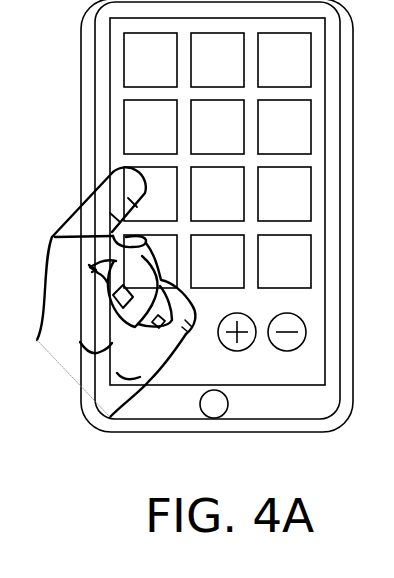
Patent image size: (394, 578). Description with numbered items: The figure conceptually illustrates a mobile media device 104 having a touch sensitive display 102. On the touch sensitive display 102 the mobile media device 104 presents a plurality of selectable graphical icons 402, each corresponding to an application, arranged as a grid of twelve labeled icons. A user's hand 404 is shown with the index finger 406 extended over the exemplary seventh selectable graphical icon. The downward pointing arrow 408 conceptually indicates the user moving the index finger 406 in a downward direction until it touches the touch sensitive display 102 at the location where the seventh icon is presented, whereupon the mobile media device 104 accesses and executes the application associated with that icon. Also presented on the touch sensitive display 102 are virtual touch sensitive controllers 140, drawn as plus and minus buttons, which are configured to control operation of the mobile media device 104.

The touch sensitive display 102 is at (310, 380).
The mobile media device 104 is at (81, 25).
The virtual touch sensitive controllers 140 is at (226, 355).
The selectable graphical icons 402 is at (309, 94).
The user's hand 404 is at (92, 375).
The index finger 406 is at (127, 183).
The downward pointing arrow 408 is at (164, 201).